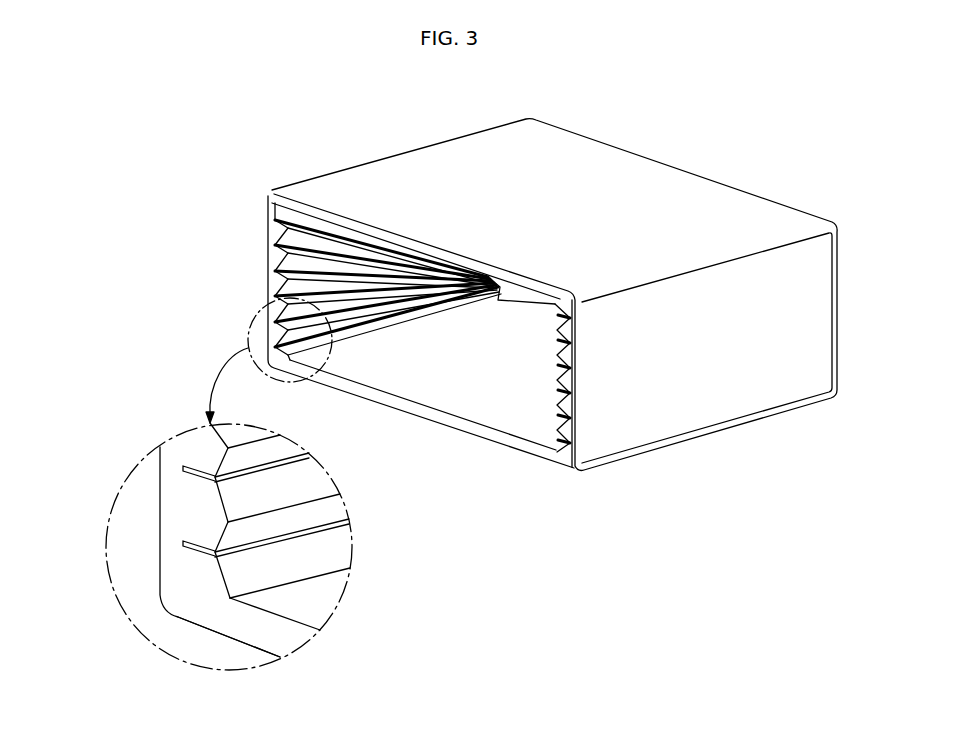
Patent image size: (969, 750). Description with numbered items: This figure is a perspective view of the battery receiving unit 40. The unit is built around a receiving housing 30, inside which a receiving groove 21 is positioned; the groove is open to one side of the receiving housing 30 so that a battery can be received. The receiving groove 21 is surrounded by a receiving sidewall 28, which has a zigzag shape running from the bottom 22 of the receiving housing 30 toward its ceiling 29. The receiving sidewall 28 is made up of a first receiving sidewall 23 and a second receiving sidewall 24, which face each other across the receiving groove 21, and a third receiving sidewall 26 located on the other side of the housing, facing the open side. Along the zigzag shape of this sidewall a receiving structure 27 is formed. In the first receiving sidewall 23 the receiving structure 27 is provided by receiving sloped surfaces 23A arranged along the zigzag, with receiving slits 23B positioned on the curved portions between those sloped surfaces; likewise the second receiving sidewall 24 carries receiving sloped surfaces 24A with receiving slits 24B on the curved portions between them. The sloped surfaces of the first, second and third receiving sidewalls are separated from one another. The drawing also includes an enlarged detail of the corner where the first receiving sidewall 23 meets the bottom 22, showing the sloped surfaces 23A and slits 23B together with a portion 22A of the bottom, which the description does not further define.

The battery receiving unit 40 is at (292, 104).
The receiving groove 21 is at (498, 416).
The bottom 22 is at (437, 417).
The bottom plate inner surface 22A is at (318, 603).
The first receiving sidewall 23 is at (268, 230).
The receiving sloped surface 23A is at (238, 572).
The receiving slit 23B is at (183, 484).
The second receiving sidewall 24 is at (603, 407).
The receiving sloped surface 24A is at (566, 384).
The receiving slit 24B is at (574, 357).
The third receiving sidewall 26 is at (703, 178).
The receiving structure 27 is at (518, 306).
The receiving sidewall 28 is at (499, 316).
The ceiling 29 is at (520, 282).
The receiving housing 30 is at (737, 403).